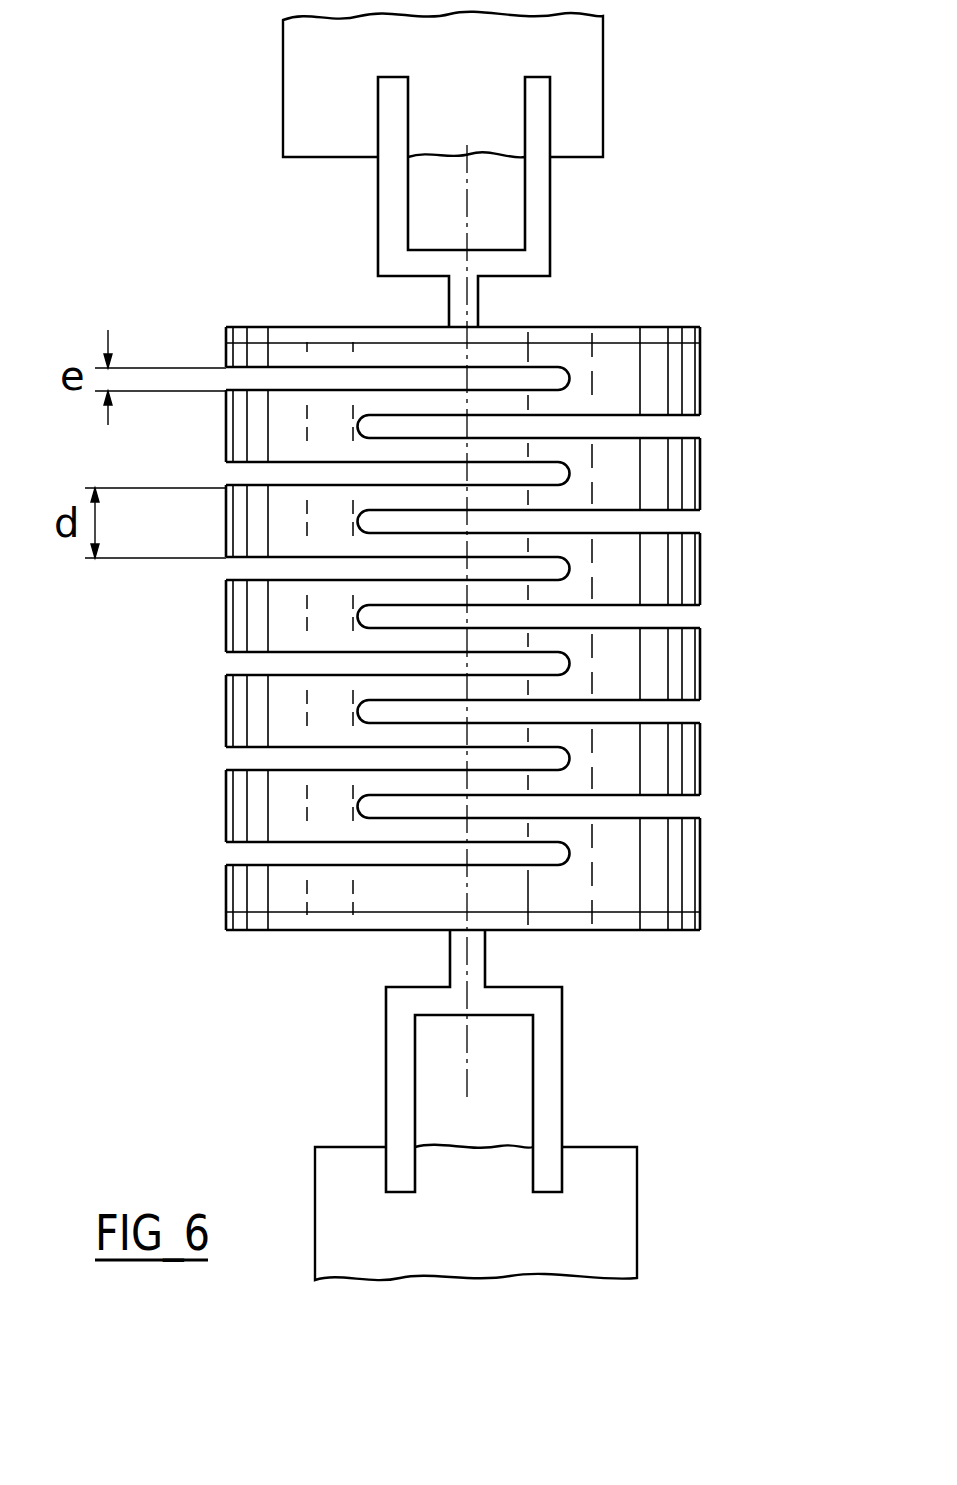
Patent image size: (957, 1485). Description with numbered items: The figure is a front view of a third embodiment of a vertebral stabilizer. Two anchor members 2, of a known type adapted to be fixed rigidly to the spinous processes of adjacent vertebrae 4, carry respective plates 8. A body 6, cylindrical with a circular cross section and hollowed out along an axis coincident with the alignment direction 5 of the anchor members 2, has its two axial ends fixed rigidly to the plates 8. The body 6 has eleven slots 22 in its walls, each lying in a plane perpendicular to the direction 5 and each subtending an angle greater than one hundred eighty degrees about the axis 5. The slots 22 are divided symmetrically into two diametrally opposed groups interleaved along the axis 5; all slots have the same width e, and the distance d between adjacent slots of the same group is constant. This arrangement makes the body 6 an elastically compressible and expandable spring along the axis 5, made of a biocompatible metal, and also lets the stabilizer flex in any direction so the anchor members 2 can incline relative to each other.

The anchor member 2 is at (548, 199).
The vertebra 4 is at (583, 48).
The alignment direction 5 is at (471, 1060).
The body 6 is at (674, 474).
The plate 8 is at (653, 333).
The slot 22 is at (655, 620).